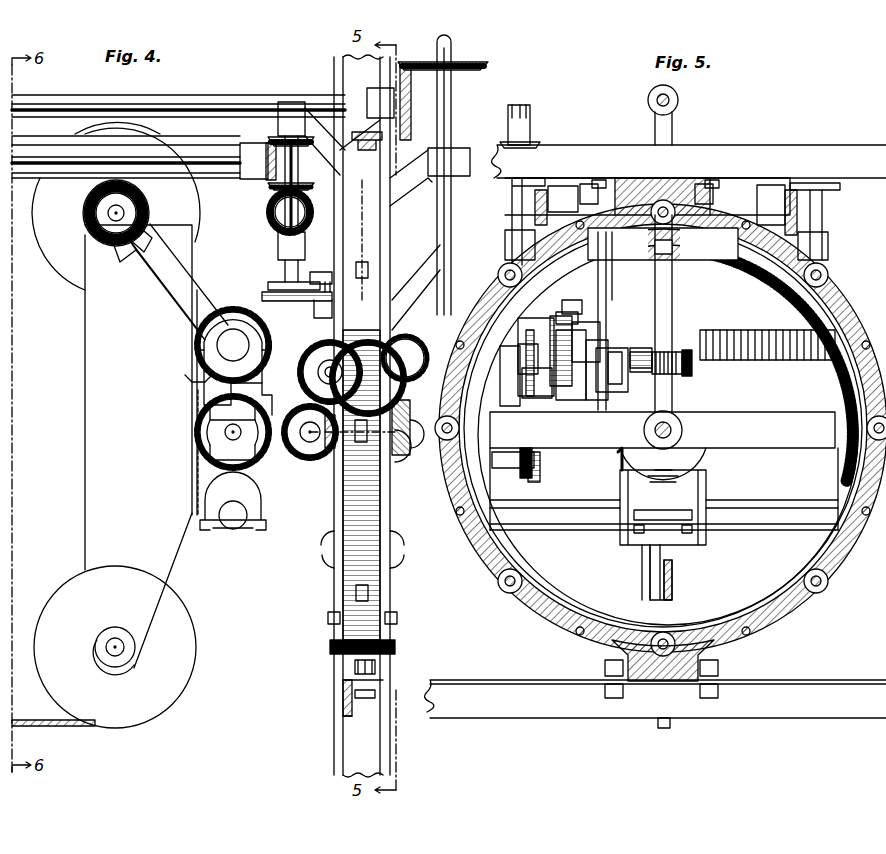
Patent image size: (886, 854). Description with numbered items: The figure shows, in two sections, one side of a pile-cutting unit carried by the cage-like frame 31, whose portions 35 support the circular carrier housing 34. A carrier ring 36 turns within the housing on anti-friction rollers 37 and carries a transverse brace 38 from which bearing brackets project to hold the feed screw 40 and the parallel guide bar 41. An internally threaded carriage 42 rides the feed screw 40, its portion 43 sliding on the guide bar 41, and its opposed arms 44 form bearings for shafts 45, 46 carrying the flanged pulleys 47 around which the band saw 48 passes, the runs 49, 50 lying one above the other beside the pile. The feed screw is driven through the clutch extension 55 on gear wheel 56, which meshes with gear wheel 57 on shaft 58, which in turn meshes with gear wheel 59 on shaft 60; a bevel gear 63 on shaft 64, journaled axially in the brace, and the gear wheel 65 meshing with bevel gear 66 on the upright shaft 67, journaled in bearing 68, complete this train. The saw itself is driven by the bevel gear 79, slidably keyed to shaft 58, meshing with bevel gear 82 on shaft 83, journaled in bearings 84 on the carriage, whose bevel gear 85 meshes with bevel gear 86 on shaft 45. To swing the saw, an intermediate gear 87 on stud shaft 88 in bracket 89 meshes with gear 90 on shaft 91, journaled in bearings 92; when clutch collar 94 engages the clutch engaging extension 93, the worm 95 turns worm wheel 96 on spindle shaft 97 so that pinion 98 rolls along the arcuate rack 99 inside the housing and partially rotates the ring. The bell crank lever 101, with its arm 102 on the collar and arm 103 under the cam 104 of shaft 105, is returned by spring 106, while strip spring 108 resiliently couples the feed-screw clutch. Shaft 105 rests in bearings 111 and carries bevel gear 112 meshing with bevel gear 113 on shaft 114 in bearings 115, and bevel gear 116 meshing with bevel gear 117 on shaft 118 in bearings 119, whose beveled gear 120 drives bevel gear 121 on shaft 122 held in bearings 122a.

In FIG. 4, the frame 31 is at (343, 698).
In FIG. 5, the frame 31 is at (815, 698).
In FIG. 4, the carrier housing 34 is at (392, 540).
In FIG. 5, the carrier housing 34 is at (840, 550).
In FIG. 4, the portions of the cage 35 is at (376, 683).
In FIG. 5, the portions of the cage 35 is at (526, 686).
In FIG. 5, the carrier ring 36 is at (846, 316).
In FIG. 4, the anti-friction roller 37 is at (328, 318).
In FIG. 5, the anti-friction roller 37 is at (828, 278).
In FIG. 5, the transverse brace 38 is at (754, 422).
In FIG. 4, the feed screw 40 is at (236, 348).
In FIG. 4, the guide bar 41 is at (238, 528).
In FIG. 5, the guide bar 41 is at (740, 510).
In FIG. 4, the carriage 42 is at (128, 428).
In FIG. 5, the carriage 42 is at (686, 330).
In FIG. 5, the carriage portion 43 is at (620, 540).
In FIG. 4, the opposed arms 44 is at (118, 240).
In FIG. 4, the shaft 45 is at (122, 211).
In FIG. 4, the shaft 46 is at (125, 650).
In FIG. 4, the flanged wheel or pulley 47 is at (195, 208).
In FIG. 5, the flanged wheel or pulley 47 is at (676, 138).
In FIG. 4, the band saw 48 is at (200, 578).
In FIG. 5, the band saw 48 is at (668, 548).
In FIG. 4, the run of the saw 49 is at (178, 113).
In FIG. 4, the run of the saw 50 is at (45, 726).
In FIG. 4, the clutch extension 55 is at (362, 170).
In FIG. 4, the gear wheel 56 is at (220, 318).
In FIG. 5, the gear wheel 56 is at (542, 304).
In FIG. 4, the gear wheel 57 is at (188, 422).
In FIG. 5, the gear wheel 57 is at (536, 476).
In FIG. 4, the shaft 58 is at (228, 432).
In FIG. 4, the gear wheel 59 is at (226, 460).
In FIG. 5, the gear wheel 59 is at (502, 460).
In FIG. 4, the shaft 60 is at (312, 445).
In FIG. 4, the bevel gear 63 is at (330, 455).
In FIG. 5, the bevel gear 63 is at (680, 468).
In FIG. 4, the shaft 64 is at (366, 442).
In FIG. 5, the shaft 64 is at (684, 432).
In FIG. 4, the gear wheel 65 is at (400, 465).
In FIG. 4, the bevel gear 66 is at (418, 448).
In FIG. 4, the upright shaft 67 is at (452, 238).
In FIG. 4, the bearing 68 is at (412, 185).
In FIG. 5, the bevel gear 79 is at (616, 462).
In FIG. 4, the bevel gear 82 is at (186, 398).
In FIG. 5, the bevel gear 82 is at (637, 360).
In FIG. 4, the shaft 83 is at (168, 300).
In FIG. 5, the shaft 83 is at (590, 304).
In FIG. 4, the bearing 84 is at (132, 258).
In FIG. 4, the bevel gear 85 is at (150, 236).
In FIG. 4, the bevel gear 86 is at (84, 215).
In FIG. 4, the intermediate gear 87 is at (348, 340).
In FIG. 5, the intermediate gear 87 is at (538, 328).
In FIG. 4, the stud shaft 88 is at (335, 372).
In FIG. 4, the bracket 89 is at (290, 384).
In FIG. 5, the bracket 89 is at (522, 336).
In FIG. 5, the gear 90 is at (506, 368).
In FIG. 4, the shaft 91 is at (405, 356).
In FIG. 5, the shaft 91 is at (534, 380).
In FIG. 5, the bearing 92 is at (518, 350).
In FIG. 5, the clutch engaging extension 93 is at (552, 400).
In FIG. 5, the clutch collar 94 is at (572, 404).
In FIG. 5, the worm 95 is at (686, 386).
In FIG. 5, the worm wheel 96 is at (684, 370).
In FIG. 5, the spindle shaft 97 is at (674, 305).
In FIG. 5, the toothed pinion 98 is at (676, 275).
In FIG. 5, the arcuate rack 99 is at (836, 378).
In FIG. 4, the bell crank lever 101 is at (310, 288).
In FIG. 5, the bell crank lever 101 is at (566, 316).
In FIG. 5, the arm 102 is at (590, 320).
In FIG. 4, the arm 103 is at (322, 290).
In FIG. 4, the cam 104 is at (274, 296).
In FIG. 4, the shaft 105 is at (282, 224).
In FIG. 5, the shaft 105 is at (508, 240).
In FIG. 5, the spring 106 is at (598, 404).
In FIG. 4, the strip spring 108 is at (278, 300).
In FIG. 4, the bearing 111 is at (278, 122).
In FIG. 5, the bearing 111 is at (532, 122).
In FIG. 4, the bevel gear 112 is at (268, 140).
In FIG. 5, the bevel gear 112 is at (540, 143).
In FIG. 4, the bevel gear 113 is at (280, 160).
In FIG. 4, the shaft 114 is at (180, 152).
In FIG. 4, the bearing 115 is at (262, 180).
In FIG. 4, the bevel gear 116 is at (272, 192).
In FIG. 5, the bevel gear 116 is at (512, 206).
In FIG. 4, the bevel gear 117 is at (270, 214).
In FIG. 5, the bevel gear 117 is at (535, 212).
In FIG. 5, the shaft 118 is at (590, 208).
In FIG. 5, the bearing 119 is at (560, 186).
In FIG. 5, the beveled gear 120 is at (800, 215).
In FIG. 5, the bevel gear 121 is at (832, 195).
In FIG. 5, the shaft 122 is at (826, 244).
In FIG. 5, the bearing 122a is at (828, 252).